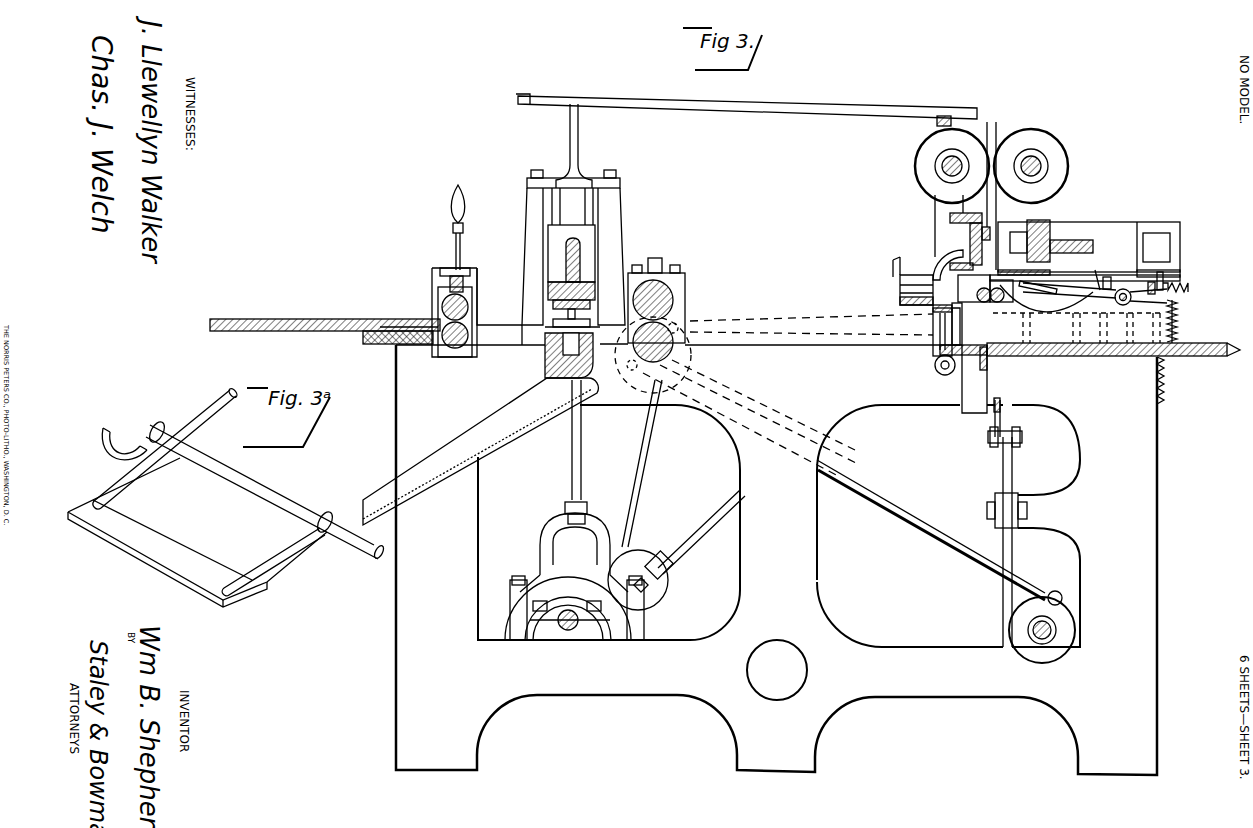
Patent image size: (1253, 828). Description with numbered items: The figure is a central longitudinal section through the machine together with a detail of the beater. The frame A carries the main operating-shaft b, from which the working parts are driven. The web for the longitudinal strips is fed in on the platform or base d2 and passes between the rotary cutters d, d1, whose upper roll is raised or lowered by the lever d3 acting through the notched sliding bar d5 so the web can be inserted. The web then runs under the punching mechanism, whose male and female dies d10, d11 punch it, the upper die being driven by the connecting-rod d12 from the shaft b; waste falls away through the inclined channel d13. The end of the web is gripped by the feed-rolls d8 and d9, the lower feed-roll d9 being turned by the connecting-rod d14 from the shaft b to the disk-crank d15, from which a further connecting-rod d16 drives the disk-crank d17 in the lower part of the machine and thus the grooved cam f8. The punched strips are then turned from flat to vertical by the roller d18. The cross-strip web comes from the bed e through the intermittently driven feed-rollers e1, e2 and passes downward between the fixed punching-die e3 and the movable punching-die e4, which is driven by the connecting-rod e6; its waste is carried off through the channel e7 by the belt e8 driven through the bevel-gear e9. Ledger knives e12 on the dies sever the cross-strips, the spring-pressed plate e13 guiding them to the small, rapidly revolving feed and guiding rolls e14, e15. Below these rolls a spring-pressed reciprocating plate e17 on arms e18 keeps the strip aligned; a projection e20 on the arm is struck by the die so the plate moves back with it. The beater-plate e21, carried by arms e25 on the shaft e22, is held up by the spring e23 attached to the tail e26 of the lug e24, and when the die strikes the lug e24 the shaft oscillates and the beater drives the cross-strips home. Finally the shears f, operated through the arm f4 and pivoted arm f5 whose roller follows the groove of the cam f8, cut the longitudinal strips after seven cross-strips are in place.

In FIG. 3, the frame A is at (830, 427).
In FIG. 3, the main operating-shaft b is at (567, 630).
In FIG. 3, the rotary cutter d is at (435, 326).
In FIG. 3, the rotary cutter d1 is at (462, 307).
In FIG. 3, the operating platform or base d2 is at (293, 316).
In FIG. 3, the lever d3 is at (461, 218).
In FIG. 3, the sliding bar d5 is at (465, 272).
In FIG. 3, the feed-roll d8 is at (652, 308).
In FIG. 3, the lower feed-roll d9 is at (673, 357).
In FIG. 3, the male die d10 is at (585, 247).
In FIG. 3, the female die d11 is at (547, 333).
In FIG. 3, the connecting-rod d12 is at (593, 452).
In FIG. 3, the inclined channel d13 is at (480, 451).
In FIG. 3, the connecting-rod d14 is at (640, 462).
In FIG. 3, the disk-crank d15 is at (774, 395).
In FIG. 3, the connecting-rod d16 is at (880, 503).
In FIG. 3, the disk-crank d17 is at (1065, 600).
In FIG. 3, the roller d18 is at (940, 340).
In FIG. 3, the bed e is at (746, 96).
In FIG. 3, the feed-roller e1 is at (975, 140).
In FIG. 3, the feed-roller e2 is at (1042, 135).
In FIG. 3, the punching-die e3 is at (970, 237).
In FIG. 3, the movable punching-die e4 is at (1030, 265).
In FIG. 3, the connecting-rod e6 is at (703, 524).
In FIG. 3, the channel e7 is at (897, 262).
In FIG. 3, the belt e8 is at (900, 286).
In FIG. 3, the bevel-gear e9 is at (1140, 270).
In FIG. 3, the ledger knives or cutters e12 is at (968, 290).
In FIG. 3, the spring-pressed plate e13 is at (1032, 230).
In FIG. 3, the small feed-roll e14 is at (992, 305).
In FIG. 3, the guide or feed roll e15 is at (1010, 300).
In FIG. 3, the reciprocating plate e17 is at (958, 312).
In FIG. 3, the arms e18 is at (1080, 300).
In FIG. 3, the projection e20 is at (1162, 275).
In FIG. 3, the beater-plate e21 is at (962, 292).
In FIG. 3A, the beater-plate e21 is at (172, 543).
In FIG. 3, the rod or shaft e22 is at (1108, 278).
In FIG. 3A, the rod or shaft e22 is at (282, 507).
In FIG. 3, the spring e23 is at (1187, 352).
In FIG. 3, the lug e24 is at (1096, 272).
In FIG. 3A, the lug e24 is at (120, 418).
In FIG. 3, the arms e25 is at (1057, 290).
In FIG. 3, the arm or tail e26 is at (1158, 292).
In FIG. 3A, the arm or tail e26 is at (216, 392).
In FIG. 3, the cutting-shears f is at (977, 362).
In FIG. 3, the arm f4 is at (1013, 403).
In FIG. 3, the pivoted arm f5 is at (1011, 493).
In FIG. 3, the cam f8 is at (1038, 650).